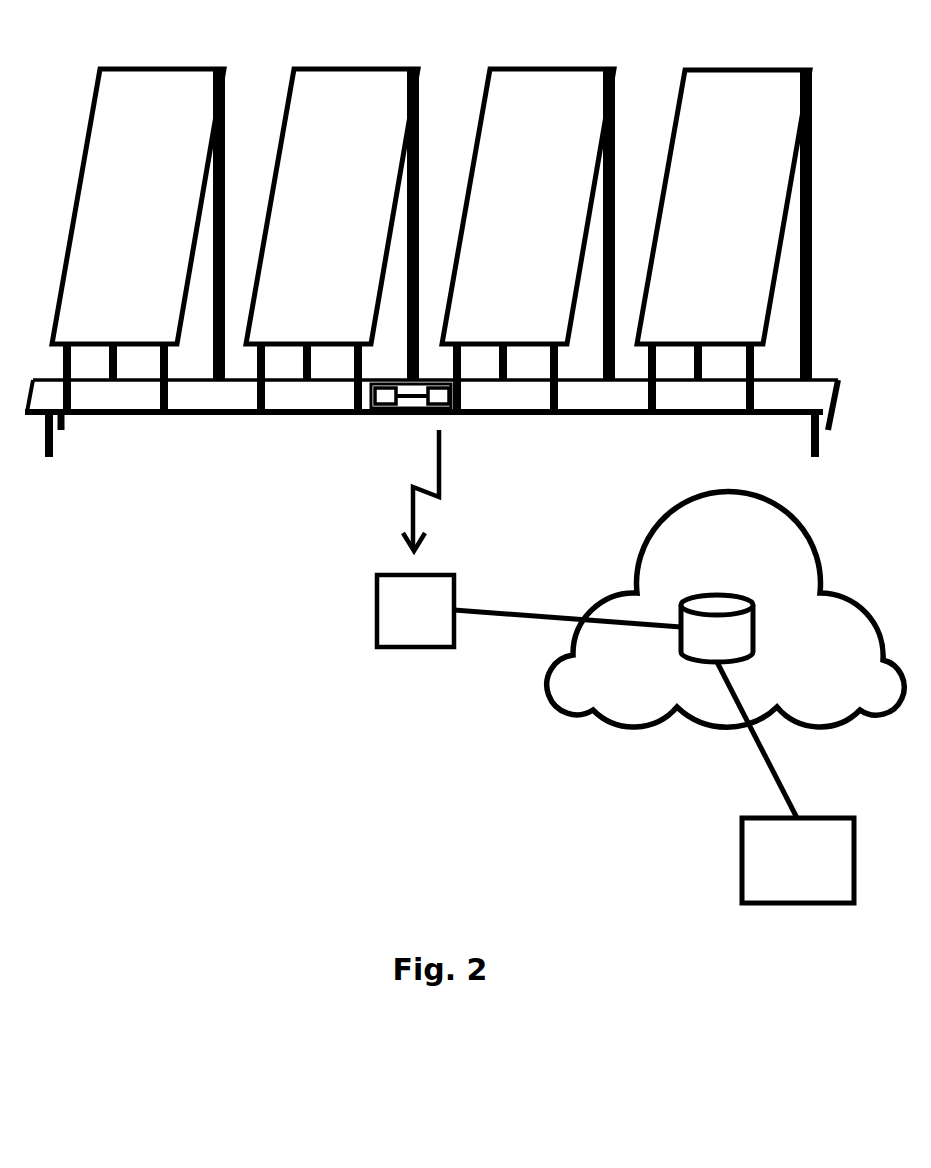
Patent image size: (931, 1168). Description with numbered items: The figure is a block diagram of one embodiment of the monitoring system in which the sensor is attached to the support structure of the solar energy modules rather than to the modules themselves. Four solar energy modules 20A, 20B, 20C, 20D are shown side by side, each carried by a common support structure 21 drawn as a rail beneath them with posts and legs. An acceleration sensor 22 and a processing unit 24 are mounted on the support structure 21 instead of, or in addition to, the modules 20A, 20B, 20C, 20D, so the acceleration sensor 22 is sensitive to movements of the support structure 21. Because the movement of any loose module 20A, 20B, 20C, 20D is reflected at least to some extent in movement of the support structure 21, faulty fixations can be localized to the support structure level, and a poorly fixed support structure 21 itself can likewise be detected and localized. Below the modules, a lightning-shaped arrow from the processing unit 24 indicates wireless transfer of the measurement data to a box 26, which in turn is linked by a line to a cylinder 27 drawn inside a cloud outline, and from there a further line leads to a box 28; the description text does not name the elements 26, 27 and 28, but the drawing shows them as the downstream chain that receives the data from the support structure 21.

The solar energy module 20A is at (137, 68).
The solar energy module 20B is at (332, 68).
The solar energy module 20C is at (527, 68).
The solar energy module 20D is at (725, 69).
The support structure 21 is at (224, 413).
The acceleration sensor 22 is at (383, 415).
The processing unit 24 is at (438, 415).
The gateway / receiver 26 is at (377, 609).
The server / database 27 is at (715, 593).
The client device 28 is at (740, 861).